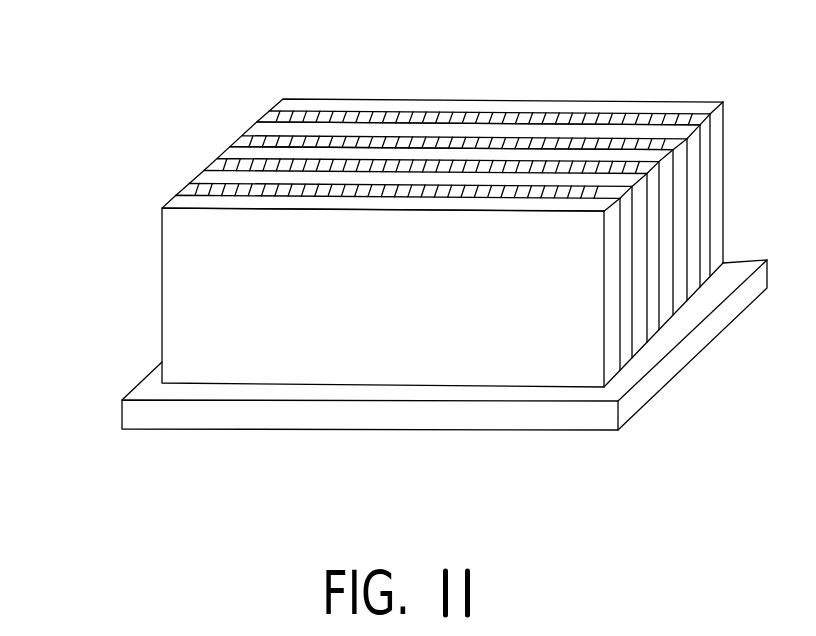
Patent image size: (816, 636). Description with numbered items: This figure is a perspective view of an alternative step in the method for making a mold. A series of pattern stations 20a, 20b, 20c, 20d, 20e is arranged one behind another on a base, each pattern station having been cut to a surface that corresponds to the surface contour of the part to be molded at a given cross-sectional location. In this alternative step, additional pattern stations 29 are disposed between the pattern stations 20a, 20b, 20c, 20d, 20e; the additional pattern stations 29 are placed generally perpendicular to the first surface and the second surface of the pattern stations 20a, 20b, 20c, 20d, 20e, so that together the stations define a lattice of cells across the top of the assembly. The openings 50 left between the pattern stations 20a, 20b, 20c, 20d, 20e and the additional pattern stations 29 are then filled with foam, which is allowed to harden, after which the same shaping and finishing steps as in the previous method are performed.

The pattern station 20a is at (162, 322).
The pattern station 20b is at (212, 182).
The pattern station 20c is at (240, 151).
The pattern station 20d is at (270, 128).
The pattern station 20e is at (290, 108).
The additional pattern stations 29 is at (362, 163).
The openings 50 is at (602, 142).